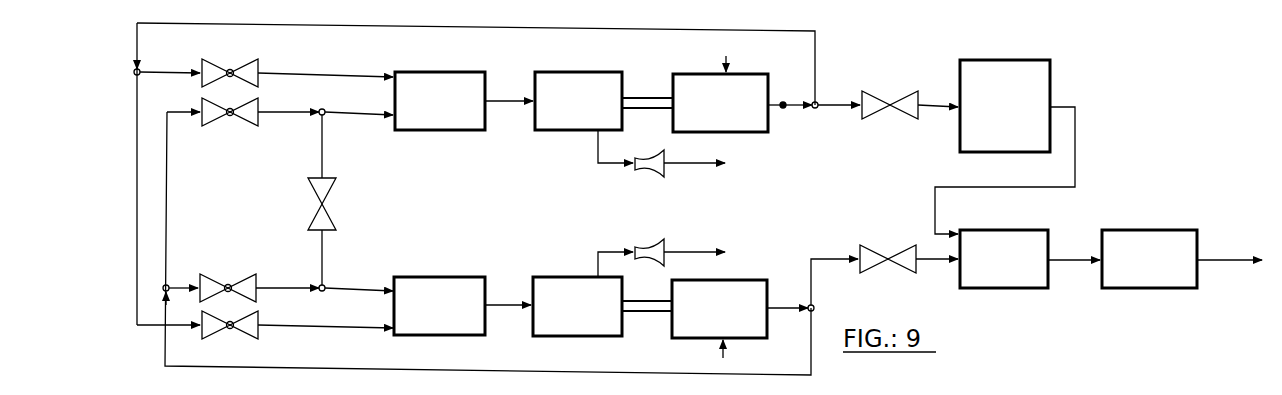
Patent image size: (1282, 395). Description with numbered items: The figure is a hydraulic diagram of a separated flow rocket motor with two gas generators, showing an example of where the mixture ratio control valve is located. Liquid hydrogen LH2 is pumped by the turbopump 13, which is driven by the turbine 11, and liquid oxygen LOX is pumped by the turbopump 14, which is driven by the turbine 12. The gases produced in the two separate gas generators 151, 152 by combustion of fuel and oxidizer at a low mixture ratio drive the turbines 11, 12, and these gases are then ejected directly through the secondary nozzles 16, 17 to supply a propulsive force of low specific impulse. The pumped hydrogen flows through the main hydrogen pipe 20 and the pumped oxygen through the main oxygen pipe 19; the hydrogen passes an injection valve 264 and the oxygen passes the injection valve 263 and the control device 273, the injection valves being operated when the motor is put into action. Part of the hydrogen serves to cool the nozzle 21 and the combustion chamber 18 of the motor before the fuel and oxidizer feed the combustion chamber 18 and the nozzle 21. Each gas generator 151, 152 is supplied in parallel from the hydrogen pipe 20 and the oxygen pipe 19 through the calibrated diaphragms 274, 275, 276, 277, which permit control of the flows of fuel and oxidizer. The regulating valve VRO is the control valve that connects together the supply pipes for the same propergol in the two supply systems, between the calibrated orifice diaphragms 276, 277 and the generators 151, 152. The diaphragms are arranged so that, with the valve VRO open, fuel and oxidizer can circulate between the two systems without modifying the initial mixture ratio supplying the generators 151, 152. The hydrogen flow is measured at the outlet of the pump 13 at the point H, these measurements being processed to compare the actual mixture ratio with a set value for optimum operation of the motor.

The turbine 11 is at (590, 111).
The turbine 12 is at (590, 317).
The turbopump 13 is at (729, 113).
The turbopump 14 is at (729, 321).
The secondary nozzle 16 is at (661, 160).
The secondary nozzle 17 is at (661, 252).
The combustion chamber 18 is at (1012, 272).
The pipe 19 is at (490, 371).
The pipe 20 is at (480, 24).
The nozzle 21 is at (1018, 122).
The gas generator 151 is at (449, 111).
The gas generator 152 is at (455, 317).
The injection valve 263 is at (884, 275).
The injection valve 264 is at (888, 95).
The control device 273 is at (883, 303).
The diaphragm 274 is at (266, 62).
The diaphragm 275 is at (265, 336).
The diaphragm 276 is at (280, 125).
The diaphragm 277 is at (281, 277).
The regulating valve VRO is at (306, 213).
The liquid hydrogen LH2 is at (724, 53).
The liquid oxygen LOX is at (723, 357).
The hydrogen measurement point H is at (788, 87).